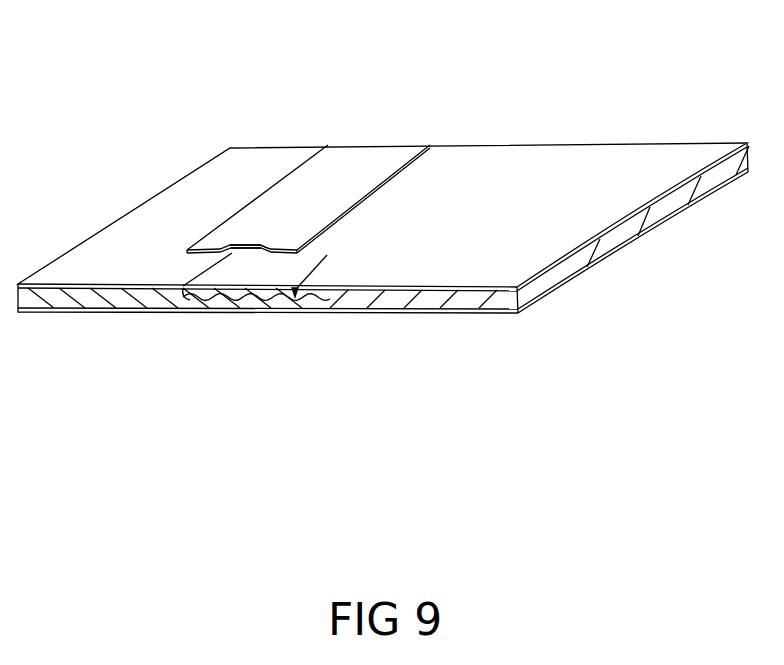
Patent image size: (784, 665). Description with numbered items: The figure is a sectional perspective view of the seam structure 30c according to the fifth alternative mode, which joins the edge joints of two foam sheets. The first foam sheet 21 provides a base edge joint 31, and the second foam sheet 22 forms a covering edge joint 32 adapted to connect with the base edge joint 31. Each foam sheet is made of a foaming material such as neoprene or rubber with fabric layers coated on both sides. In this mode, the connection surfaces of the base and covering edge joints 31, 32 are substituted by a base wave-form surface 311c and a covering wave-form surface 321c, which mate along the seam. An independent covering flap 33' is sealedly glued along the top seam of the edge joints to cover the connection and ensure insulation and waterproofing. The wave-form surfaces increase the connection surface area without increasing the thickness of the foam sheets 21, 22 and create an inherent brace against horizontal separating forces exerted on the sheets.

The seam structure 30c is at (542, 68).
The covering flap 33' is at (342, 172).
The covering edge joint 32 is at (330, 251).
The covering wave-form surface 321c is at (296, 287).
The second foam sheet 22 is at (603, 280).
The first foam sheet 21 is at (69, 321).
The base wave-form surface 311c is at (217, 313).
The base edge joint 31 is at (312, 324).